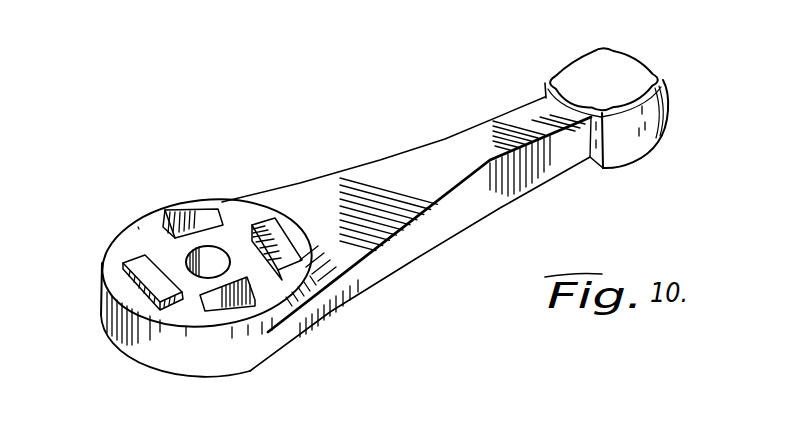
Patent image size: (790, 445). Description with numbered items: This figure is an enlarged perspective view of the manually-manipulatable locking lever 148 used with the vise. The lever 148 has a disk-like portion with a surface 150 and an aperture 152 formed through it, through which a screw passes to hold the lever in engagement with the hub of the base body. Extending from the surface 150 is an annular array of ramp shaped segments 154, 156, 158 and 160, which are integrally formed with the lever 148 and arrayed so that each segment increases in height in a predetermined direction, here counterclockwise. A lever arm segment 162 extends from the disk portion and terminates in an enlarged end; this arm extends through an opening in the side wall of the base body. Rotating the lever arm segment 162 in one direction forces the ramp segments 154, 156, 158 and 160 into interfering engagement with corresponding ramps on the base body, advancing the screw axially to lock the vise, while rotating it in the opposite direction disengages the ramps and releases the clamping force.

The locking lever 148 is at (262, 207).
The surface 150 is at (137, 228).
The aperture 152 is at (196, 272).
The ramp shaped segment 154 is at (192, 212).
The ramp shaped segment 156 is at (135, 277).
The ramp shaped segment 158 is at (233, 306).
The ramp shaped segment 160 is at (283, 242).
The lever arm segment 162 is at (425, 150).